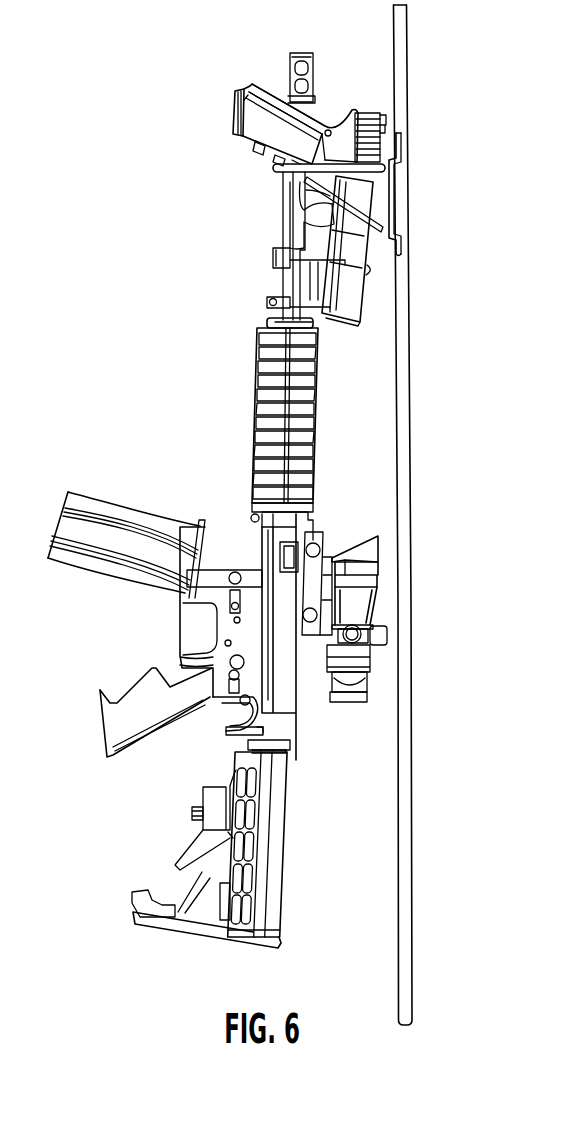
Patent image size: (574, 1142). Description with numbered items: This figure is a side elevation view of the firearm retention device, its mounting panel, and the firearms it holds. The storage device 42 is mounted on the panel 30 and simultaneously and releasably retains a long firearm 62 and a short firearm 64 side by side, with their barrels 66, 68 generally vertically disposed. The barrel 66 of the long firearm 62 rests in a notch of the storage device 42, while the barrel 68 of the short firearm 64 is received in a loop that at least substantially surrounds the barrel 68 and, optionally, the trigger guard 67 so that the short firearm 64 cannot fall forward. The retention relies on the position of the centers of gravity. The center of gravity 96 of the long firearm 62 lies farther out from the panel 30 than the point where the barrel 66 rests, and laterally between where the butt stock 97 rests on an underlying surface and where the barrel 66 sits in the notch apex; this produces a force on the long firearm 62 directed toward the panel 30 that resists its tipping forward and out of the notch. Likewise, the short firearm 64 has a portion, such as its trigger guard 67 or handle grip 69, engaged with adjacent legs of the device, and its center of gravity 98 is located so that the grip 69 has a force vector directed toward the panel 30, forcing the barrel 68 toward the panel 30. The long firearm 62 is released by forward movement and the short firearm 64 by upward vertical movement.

The panel 30 is at (471, 648).
The storage device 42 is at (277, 168).
The long firearm 62 is at (256, 452).
The short firearm 64 is at (276, 94).
The barrel 66 is at (290, 235).
The trigger guard 67 is at (293, 205).
The barrel 68 is at (458, 291).
The handle grip 69 is at (273, 92).
The center of gravity 96 is at (462, 471).
The butt stock 97 is at (316, 884).
The center of gravity 98 is at (493, 176).